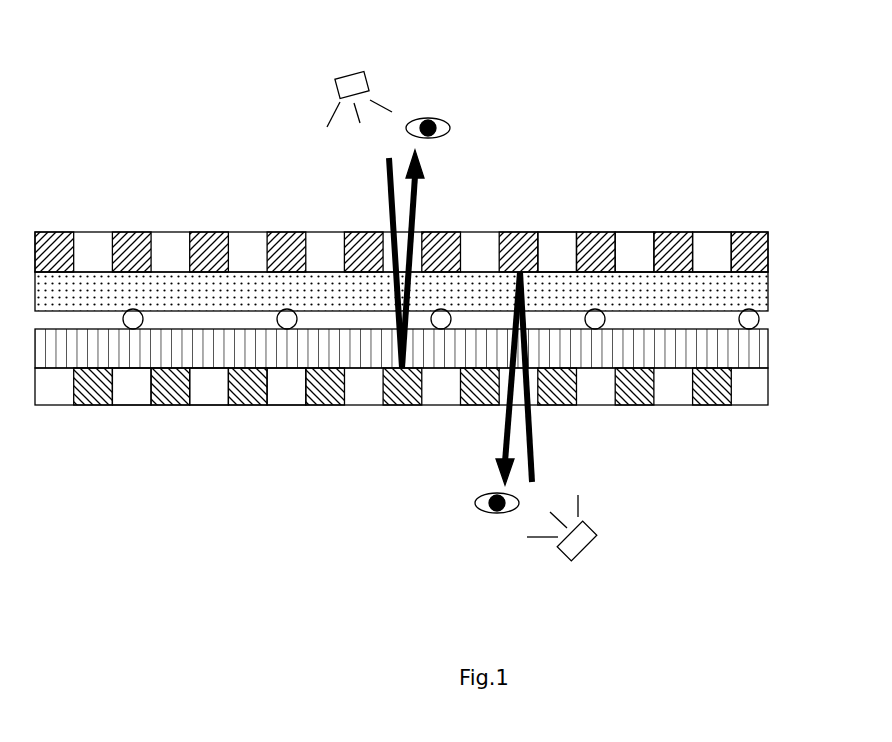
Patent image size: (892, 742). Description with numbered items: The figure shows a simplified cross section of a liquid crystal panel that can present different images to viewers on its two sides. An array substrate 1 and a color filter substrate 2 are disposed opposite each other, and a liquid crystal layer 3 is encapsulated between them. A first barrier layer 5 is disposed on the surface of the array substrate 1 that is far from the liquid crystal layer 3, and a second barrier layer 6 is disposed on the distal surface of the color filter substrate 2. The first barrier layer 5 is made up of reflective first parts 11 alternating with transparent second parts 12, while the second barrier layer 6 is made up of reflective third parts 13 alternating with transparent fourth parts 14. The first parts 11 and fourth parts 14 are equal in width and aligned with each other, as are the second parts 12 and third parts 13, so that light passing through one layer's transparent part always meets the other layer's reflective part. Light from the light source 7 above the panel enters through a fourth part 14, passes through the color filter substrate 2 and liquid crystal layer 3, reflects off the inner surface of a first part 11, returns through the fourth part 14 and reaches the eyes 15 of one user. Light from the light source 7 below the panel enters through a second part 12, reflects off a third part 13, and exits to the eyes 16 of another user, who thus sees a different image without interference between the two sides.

The array substrate 1 is at (768, 349).
The color filter substrate 2 is at (768, 291).
The liquid crystal layer 3 is at (759, 317).
The first barrier layer 5 is at (768, 388).
The second barrier layer 6 is at (768, 252).
The light source 7 is at (336, 84).
The first part 11 is at (707, 405).
The second part 12 is at (277, 405).
The third part 13 is at (128, 232).
The fourth part 14 is at (713, 230).
The eyes 15 is at (433, 117).
The eyes 16 is at (478, 508).